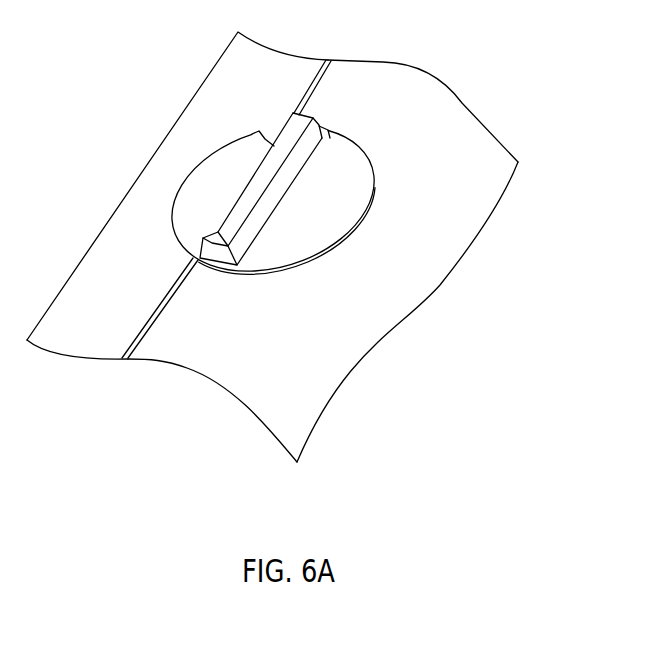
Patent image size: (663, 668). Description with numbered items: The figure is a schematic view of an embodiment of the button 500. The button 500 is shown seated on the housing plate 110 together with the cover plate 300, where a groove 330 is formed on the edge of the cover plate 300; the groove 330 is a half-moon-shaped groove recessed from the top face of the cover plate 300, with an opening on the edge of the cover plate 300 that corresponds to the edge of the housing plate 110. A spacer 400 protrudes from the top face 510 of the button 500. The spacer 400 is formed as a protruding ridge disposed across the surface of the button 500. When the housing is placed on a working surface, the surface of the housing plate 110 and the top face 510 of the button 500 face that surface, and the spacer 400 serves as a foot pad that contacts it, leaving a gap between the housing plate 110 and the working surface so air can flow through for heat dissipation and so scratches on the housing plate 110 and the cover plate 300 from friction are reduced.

The housing plate 110 is at (463, 218).
The cover plate 300 is at (233, 75).
The groove 330 is at (212, 197).
The spacer 400 is at (295, 110).
The button 500 is at (355, 177).
The top face 510 is at (333, 160).